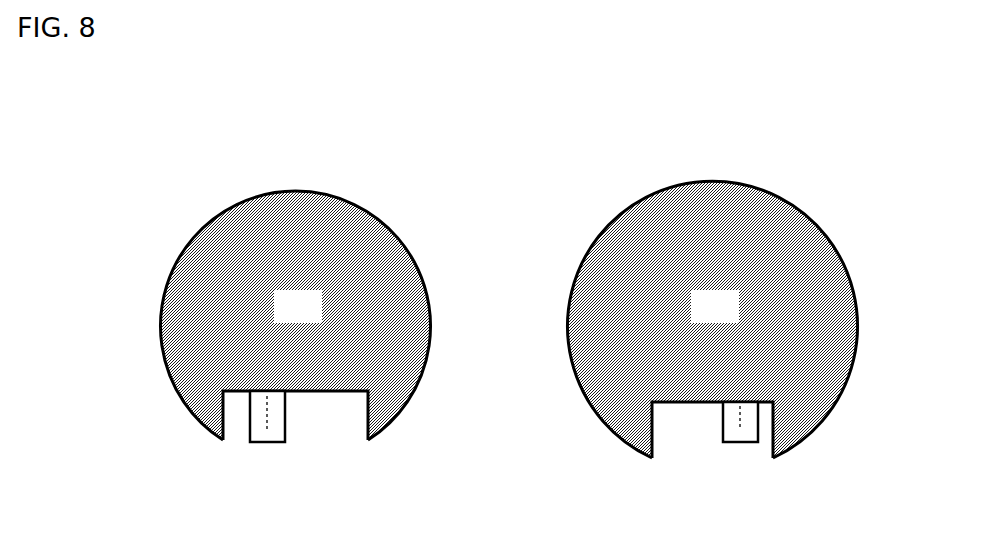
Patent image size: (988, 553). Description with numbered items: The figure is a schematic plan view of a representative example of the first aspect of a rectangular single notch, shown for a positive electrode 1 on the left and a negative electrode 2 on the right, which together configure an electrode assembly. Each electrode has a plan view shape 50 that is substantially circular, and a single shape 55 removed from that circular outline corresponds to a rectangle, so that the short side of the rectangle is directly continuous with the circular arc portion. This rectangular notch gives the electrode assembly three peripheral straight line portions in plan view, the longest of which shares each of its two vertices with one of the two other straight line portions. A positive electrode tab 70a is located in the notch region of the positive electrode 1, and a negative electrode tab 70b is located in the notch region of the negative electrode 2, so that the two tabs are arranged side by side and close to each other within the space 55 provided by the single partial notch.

The positive electrode 1 is at (215, 192).
The negative electrode 2 is at (825, 198).
The plan view shape having circular notch 50 is at (317, 318).
The single shape removed (rectangular notch / space) 55 is at (345, 427).
The positive electrode tab 70a is at (261, 437).
The negative electrode tab 70b is at (733, 433).